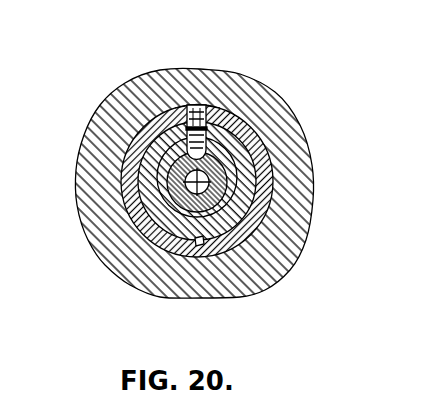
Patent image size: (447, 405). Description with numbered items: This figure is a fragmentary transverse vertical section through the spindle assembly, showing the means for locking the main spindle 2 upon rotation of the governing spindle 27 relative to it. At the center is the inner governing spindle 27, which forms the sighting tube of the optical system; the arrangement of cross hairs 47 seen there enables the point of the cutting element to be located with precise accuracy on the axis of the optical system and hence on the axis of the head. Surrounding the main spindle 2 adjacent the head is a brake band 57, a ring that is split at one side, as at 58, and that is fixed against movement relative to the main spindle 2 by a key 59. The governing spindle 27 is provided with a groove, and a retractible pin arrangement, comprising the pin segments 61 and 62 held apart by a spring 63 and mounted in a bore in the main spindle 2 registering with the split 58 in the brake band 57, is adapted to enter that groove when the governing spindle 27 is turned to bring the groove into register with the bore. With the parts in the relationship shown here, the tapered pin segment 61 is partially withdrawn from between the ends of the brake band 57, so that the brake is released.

The main spindle 2 is at (88, 214).
The governing spindle 27 is at (207, 182).
The cross hairs 47 is at (236, 160).
The brake band 57 is at (130, 157).
The split 58 is at (199, 104).
The key 59 is at (200, 243).
The pin segment 61 is at (214, 103).
The pin segment 62 is at (248, 122).
The spring 63 is at (187, 128).